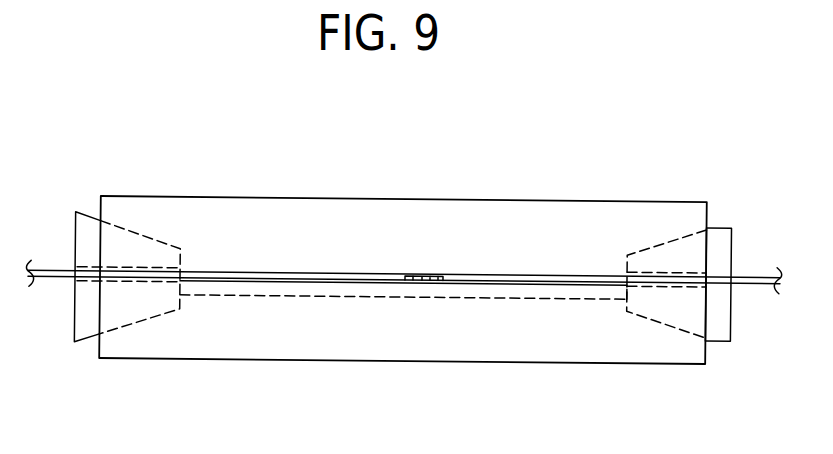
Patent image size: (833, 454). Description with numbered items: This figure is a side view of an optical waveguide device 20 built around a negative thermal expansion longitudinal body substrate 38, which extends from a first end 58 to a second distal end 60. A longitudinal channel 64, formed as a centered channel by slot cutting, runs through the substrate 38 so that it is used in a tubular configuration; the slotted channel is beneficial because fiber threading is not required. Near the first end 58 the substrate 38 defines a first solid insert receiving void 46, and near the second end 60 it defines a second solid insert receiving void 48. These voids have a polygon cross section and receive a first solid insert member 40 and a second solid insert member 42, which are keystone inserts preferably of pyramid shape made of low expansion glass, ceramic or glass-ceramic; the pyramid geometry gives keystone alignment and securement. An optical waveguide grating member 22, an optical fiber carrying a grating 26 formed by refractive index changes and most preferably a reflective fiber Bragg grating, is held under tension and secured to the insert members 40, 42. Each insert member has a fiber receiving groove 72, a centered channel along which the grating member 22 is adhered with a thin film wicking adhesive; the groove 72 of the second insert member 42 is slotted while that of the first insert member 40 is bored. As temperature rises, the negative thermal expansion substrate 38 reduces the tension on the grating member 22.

The optical waveguide device 20 is at (200, 130).
The optical waveguide grating member 22 is at (497, 263).
The grating 26 is at (424, 247).
The negative thermal expansion longitudinal body substrate 38 is at (307, 358).
The first solid insert member 40 is at (85, 350).
The second solid insert member 42 is at (722, 350).
The first solid insert receiving void 46 is at (146, 336).
The second solid insert receiving void 48 is at (656, 335).
The first end 58 is at (53, 318).
The second distal end 60 is at (751, 313).
The longitudinal channel 64 is at (310, 252).
The fiber receiving groove 72 is at (131, 247).